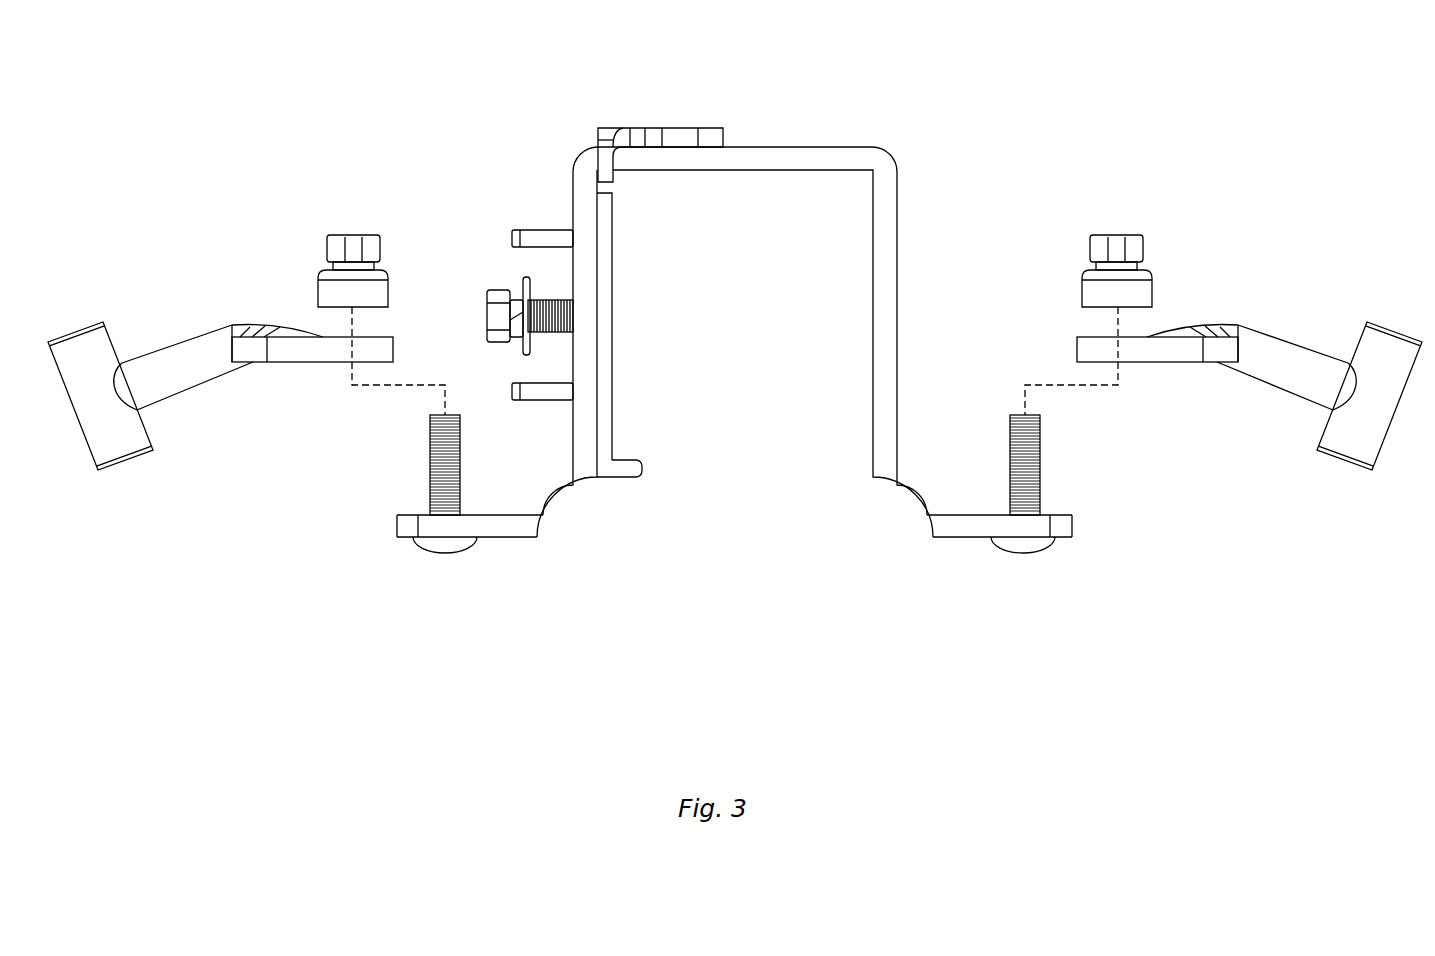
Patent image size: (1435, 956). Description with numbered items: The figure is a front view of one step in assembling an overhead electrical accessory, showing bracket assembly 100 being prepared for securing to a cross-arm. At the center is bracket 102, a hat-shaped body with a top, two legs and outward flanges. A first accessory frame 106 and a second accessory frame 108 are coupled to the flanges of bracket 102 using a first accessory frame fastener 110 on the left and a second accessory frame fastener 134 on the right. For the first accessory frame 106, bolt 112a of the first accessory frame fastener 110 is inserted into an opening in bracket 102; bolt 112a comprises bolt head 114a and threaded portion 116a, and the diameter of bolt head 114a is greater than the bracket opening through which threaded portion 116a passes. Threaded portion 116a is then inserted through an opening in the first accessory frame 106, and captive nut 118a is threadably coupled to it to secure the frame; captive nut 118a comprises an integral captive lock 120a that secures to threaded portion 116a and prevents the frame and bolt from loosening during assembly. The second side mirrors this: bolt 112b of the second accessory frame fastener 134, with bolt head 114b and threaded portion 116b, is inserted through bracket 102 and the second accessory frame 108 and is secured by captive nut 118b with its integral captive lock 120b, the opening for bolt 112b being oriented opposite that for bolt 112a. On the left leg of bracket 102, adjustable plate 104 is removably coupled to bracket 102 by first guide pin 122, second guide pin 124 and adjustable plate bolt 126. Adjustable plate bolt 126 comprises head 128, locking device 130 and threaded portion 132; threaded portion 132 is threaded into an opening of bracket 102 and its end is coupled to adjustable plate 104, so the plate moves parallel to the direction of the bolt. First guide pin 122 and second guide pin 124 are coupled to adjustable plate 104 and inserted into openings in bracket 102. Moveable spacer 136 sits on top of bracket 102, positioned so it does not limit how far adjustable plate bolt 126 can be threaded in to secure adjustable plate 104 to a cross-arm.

The bracket assembly 100 is at (883, 116).
The bracket 102 is at (580, 158).
The adjustable plate 104 is at (627, 477).
The first accessory frame 106 is at (185, 335).
The second accessory frame 108 is at (1297, 332).
The first accessory frame fastener 110 is at (444, 577).
The bolt 112a is at (417, 495).
The bolt 112b is at (1062, 467).
The bolt head 114a is at (422, 550).
The bolt head 114b is at (1043, 548).
The threaded portion 116a is at (430, 433).
The threaded portion 116b is at (1010, 443).
The captive nut 118a is at (338, 222).
The captive nut 118b is at (1162, 248).
The captive lock 120a is at (320, 282).
The captive lock 120b is at (1152, 290).
The first guide pin 122 is at (528, 235).
The second guide pin 124 is at (535, 398).
The adjustable plate bolt 126 is at (500, 278).
The head 128 is at (488, 305).
The locking device 130 is at (515, 353).
The threaded portion 132 is at (563, 300).
The second accessory frame fastener 134 is at (1025, 577).
The moveable spacer 136 is at (682, 129).